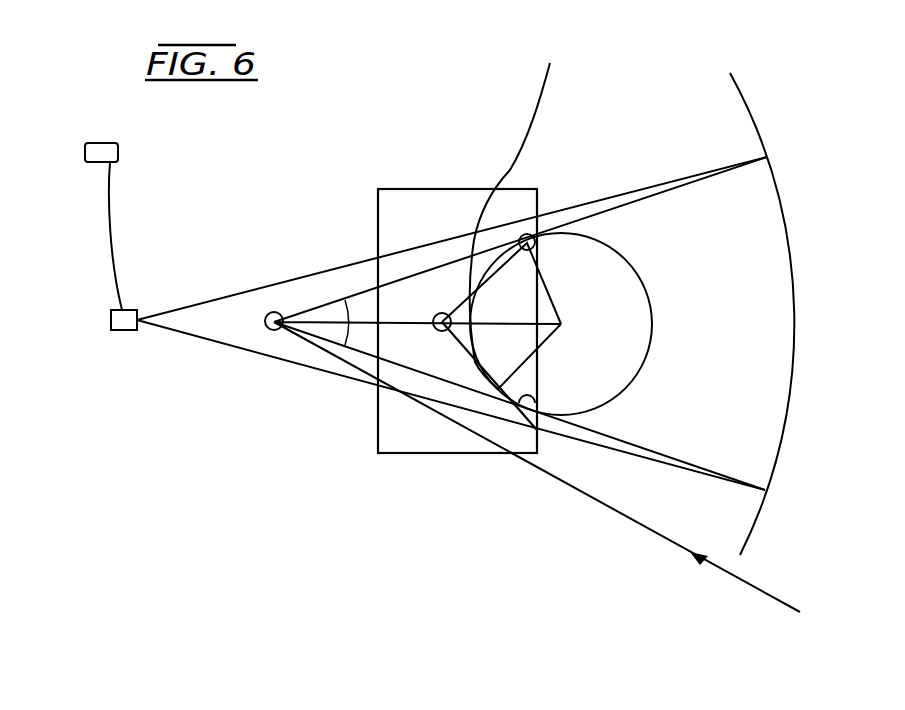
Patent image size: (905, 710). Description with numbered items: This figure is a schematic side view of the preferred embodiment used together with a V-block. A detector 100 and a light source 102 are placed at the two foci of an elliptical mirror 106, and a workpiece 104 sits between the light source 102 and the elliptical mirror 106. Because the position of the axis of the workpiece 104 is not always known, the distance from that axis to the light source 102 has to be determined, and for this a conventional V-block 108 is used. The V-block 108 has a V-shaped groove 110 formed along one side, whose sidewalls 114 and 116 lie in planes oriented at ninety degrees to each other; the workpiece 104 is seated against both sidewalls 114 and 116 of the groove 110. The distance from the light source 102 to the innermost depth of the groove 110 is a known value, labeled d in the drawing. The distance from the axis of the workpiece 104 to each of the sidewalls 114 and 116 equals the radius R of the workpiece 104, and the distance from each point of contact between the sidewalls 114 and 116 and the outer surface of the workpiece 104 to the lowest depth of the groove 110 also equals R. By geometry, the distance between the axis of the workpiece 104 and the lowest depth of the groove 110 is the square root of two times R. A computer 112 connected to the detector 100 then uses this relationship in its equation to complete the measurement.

The detector 100 is at (128, 333).
The light source 102 is at (274, 332).
The workpiece 104 is at (652, 343).
The elliptical mirror 106 is at (752, 521).
The V-block 108 is at (442, 189).
The V-shaped groove 110 is at (530, 239).
The computer 112 is at (100, 166).
The sidewall 114 is at (528, 219).
The sidewall 116 is at (470, 366).